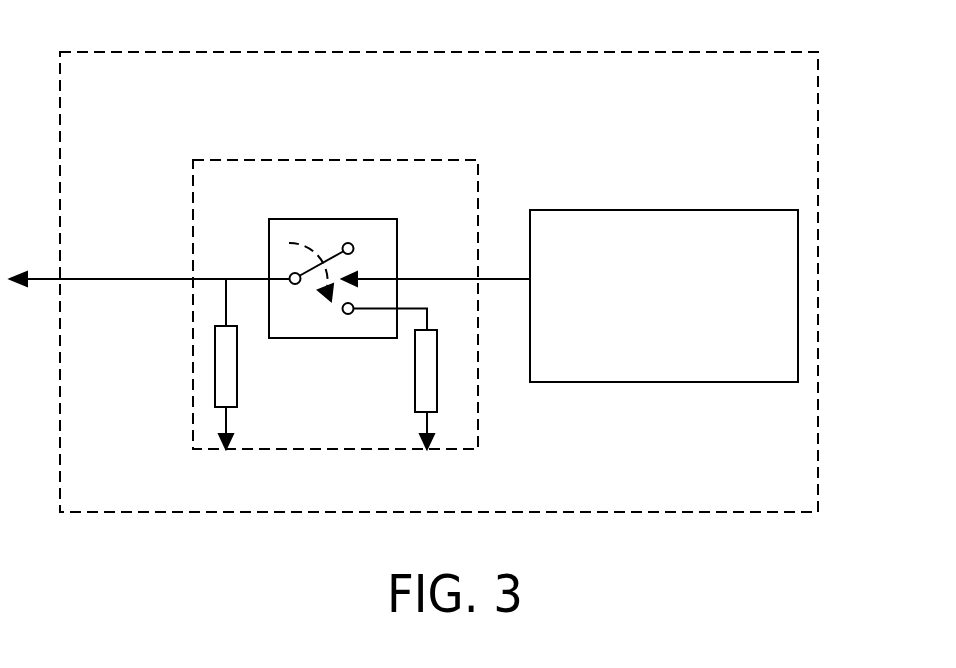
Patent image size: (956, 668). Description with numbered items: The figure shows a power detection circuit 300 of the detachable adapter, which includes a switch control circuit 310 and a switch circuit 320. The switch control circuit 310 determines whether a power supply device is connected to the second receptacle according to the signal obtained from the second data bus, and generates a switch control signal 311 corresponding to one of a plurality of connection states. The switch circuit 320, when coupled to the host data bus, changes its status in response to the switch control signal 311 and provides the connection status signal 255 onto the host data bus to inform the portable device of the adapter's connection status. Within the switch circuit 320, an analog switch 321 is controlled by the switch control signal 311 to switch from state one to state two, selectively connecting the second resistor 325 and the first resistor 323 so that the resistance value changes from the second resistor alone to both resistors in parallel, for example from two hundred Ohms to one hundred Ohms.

The power detection circuit 300 is at (638, 512).
The switch circuit 320 is at (413, 158).
The analog switch 321 is at (288, 218).
The connection status signal 255 is at (167, 279).
The switch control signal 311 is at (493, 279).
The resistor R2 325 is at (215, 367).
The resistor R1 323 is at (437, 367).
The switch control circuit 310 is at (622, 210).